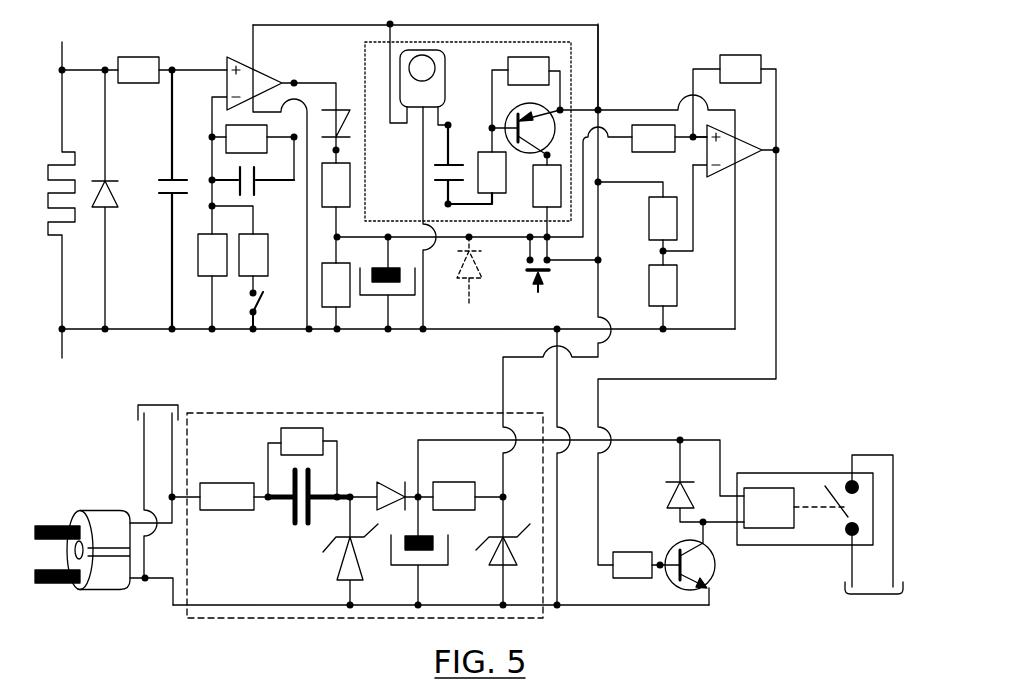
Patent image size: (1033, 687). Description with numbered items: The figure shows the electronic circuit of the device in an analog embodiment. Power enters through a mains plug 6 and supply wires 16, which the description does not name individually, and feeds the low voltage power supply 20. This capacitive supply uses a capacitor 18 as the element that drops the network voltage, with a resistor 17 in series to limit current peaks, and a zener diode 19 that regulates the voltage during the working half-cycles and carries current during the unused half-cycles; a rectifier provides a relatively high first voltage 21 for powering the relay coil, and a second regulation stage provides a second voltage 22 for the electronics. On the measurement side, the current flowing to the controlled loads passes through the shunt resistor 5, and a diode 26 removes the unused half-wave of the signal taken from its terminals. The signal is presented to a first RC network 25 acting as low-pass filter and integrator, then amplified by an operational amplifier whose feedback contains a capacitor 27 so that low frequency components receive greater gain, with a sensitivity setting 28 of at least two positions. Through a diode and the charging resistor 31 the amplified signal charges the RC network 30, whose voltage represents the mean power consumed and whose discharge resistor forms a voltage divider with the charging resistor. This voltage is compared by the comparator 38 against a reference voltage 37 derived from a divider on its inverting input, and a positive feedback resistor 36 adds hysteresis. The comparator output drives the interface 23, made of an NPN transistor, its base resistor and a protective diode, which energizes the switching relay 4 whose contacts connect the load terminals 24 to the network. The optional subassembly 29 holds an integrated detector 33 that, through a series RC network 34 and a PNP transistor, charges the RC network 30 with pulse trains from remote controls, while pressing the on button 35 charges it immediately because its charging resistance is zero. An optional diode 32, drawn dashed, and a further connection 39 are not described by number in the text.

The switching relay 4 is at (802, 473).
The shunt resistor 5 is at (52, 158).
The mains plug 6 is at (117, 592).
The supply lines 16 is at (158, 405).
The resistor 17 is at (223, 483).
The capacitor 18 is at (292, 523).
The zener diode 19 is at (322, 556).
The low voltage power supply 20 is at (282, 413).
The first voltage 21 is at (418, 446).
The second voltage 22 is at (503, 379).
The interface 23 is at (688, 540).
The load terminals 24 is at (867, 597).
The first RC network 25 is at (170, 176).
The diode 26 is at (118, 201).
The capacitor 27 is at (260, 196).
The sensitivity setting 28 is at (264, 296).
The optional subassembly 29 is at (365, 57).
The RC network 30 is at (372, 358).
The charging resistor 31 is at (350, 185).
The optional diode 32 is at (479, 300).
The integrated detector 33 is at (446, 80).
The series RC network 34 is at (481, 152).
The on button 35 is at (538, 292).
The positive feedback resistor 36 is at (730, 55).
The reference voltage 37 is at (678, 236).
The comparator 38 is at (740, 163).
The connection 39 is at (262, 686).